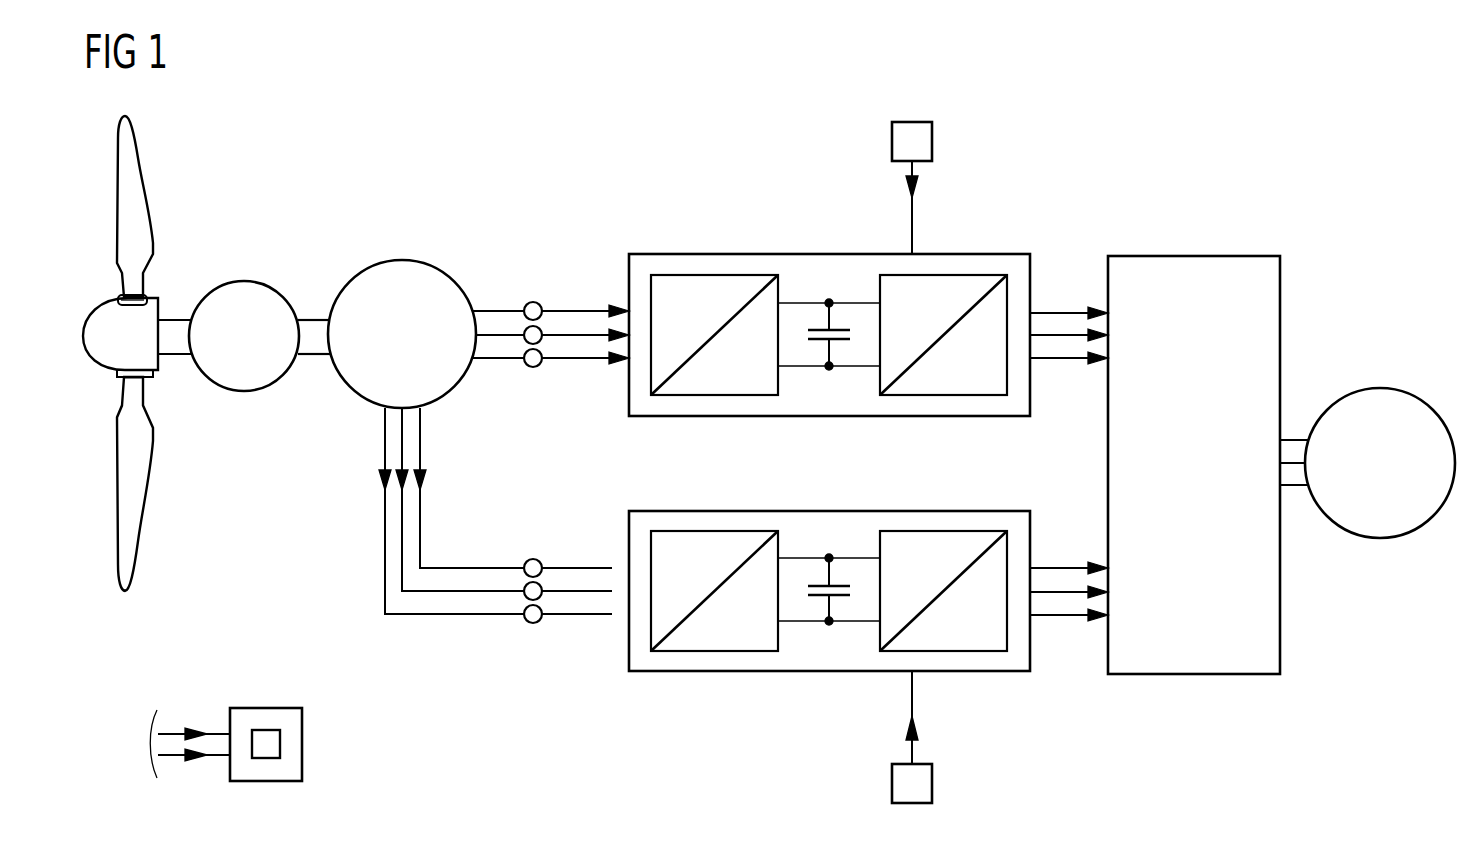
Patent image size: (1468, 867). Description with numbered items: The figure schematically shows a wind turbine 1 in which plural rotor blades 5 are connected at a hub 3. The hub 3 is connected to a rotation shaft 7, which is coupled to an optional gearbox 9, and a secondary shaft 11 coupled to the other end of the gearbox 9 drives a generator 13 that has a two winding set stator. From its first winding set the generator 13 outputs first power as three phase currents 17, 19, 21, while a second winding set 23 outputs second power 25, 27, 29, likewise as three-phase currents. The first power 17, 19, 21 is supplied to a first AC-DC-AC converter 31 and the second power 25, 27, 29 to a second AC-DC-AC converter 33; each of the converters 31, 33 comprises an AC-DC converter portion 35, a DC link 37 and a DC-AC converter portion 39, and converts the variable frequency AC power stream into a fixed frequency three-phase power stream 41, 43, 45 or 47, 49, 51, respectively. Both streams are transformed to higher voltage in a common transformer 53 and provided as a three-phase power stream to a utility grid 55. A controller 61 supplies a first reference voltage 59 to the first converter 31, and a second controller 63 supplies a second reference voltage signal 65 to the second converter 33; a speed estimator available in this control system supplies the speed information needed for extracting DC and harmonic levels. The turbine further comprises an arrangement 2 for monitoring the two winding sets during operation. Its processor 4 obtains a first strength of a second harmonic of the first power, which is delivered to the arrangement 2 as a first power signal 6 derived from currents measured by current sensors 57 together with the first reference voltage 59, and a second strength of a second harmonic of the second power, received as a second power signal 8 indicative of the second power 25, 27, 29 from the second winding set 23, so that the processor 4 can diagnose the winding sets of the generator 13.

The wind turbine 1 is at (1240, 122).
The arrangement 2 is at (266, 710).
The hub 3 is at (104, 317).
The processor 4 is at (280, 746).
The rotor blades 5 is at (146, 192).
The first power signal 6 is at (206, 734).
The rotation shaft 7 is at (180, 322).
The second power signal 8 is at (206, 760).
The gearbox 9 is at (246, 283).
The secondary shaft 11 is at (310, 322).
The generator 13 is at (400, 262).
The three phase current 17 is at (624, 300).
The three phase current 19 is at (622, 332).
The three phase current 21 is at (624, 366).
The second winding set 23 is at (330, 428).
The second power 25 is at (383, 492).
The second power 27 is at (400, 496).
The second power 29 is at (422, 492).
The first AC-DC-AC converter 31 is at (778, 256).
The second AC-DC-AC converter 33 is at (778, 513).
The AC-DC converter portion 35 is at (714, 277).
The DC link 37 is at (842, 268).
The DC-AC converter portion 39 is at (940, 277).
The three-phase power stream 41 is at (1098, 304).
The three-phase power stream 43 is at (1094, 332).
The three-phase power stream 45 is at (1094, 368).
The three-phase power stream 47 is at (1098, 560).
The three-phase power stream 49 is at (1094, 588).
The three-phase power stream 51 is at (1094, 625).
The common transformer 53 is at (1191, 258).
The utility grid 55 is at (1378, 390).
The current sensors 57 is at (526, 336).
The first reference voltage 59 is at (916, 200).
The controller 61 is at (932, 143).
The second controller 63 is at (932, 786).
The second reference voltage signal 65 is at (916, 720).